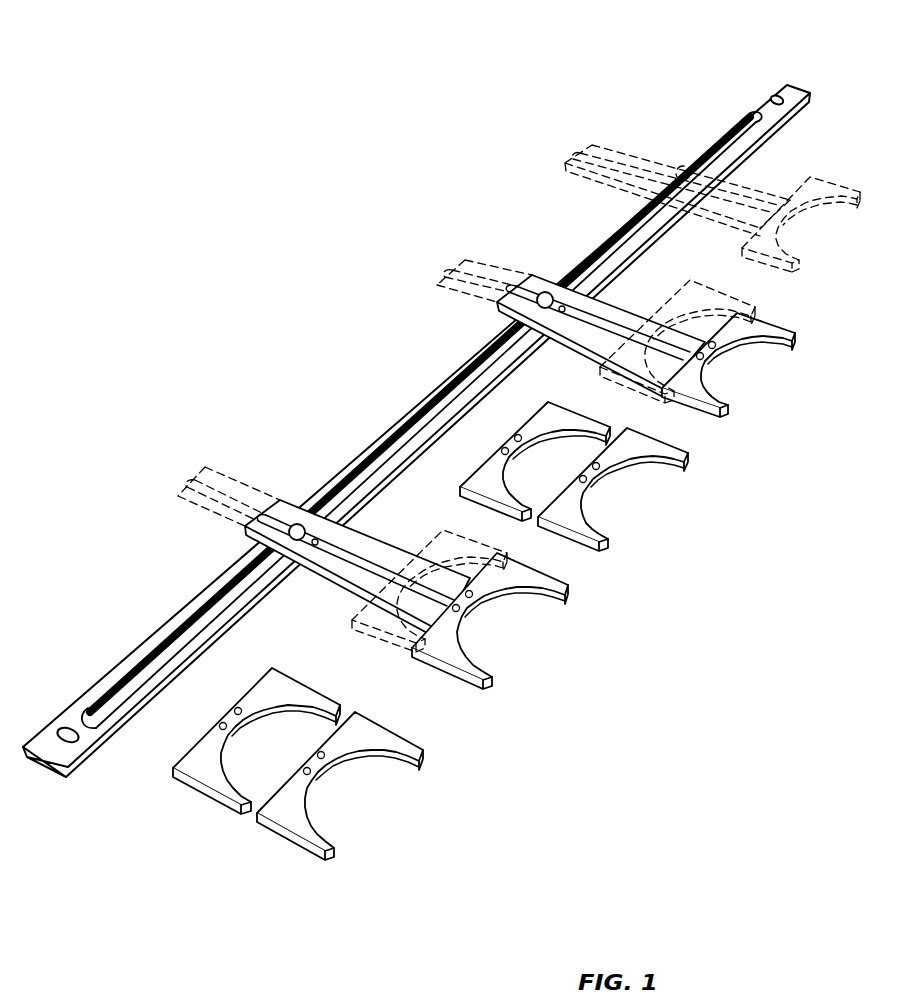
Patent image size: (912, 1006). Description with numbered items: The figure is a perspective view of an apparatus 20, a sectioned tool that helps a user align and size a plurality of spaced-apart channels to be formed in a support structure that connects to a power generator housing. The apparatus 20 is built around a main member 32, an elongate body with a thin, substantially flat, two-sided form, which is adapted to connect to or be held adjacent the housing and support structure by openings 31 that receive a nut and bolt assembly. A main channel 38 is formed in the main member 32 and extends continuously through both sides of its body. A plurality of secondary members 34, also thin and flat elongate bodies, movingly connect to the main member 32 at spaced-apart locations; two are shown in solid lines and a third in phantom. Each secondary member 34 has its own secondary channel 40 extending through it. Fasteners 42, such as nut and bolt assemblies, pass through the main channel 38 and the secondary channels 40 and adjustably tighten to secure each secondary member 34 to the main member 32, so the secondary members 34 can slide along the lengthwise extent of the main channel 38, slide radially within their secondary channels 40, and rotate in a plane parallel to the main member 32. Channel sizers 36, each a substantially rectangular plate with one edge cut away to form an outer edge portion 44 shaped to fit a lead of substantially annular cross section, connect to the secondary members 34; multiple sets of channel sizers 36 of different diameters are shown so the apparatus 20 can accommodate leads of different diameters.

The apparatus 20 is at (350, 240).
The openings 31 is at (68, 728).
The main member 32 is at (75, 770).
The secondary members 34 is at (358, 548).
The channel sizers 36 is at (292, 855).
The main channel 38 is at (185, 627).
The secondary channel 40 is at (345, 568).
The fasteners 42 is at (297, 524).
The outer edge portion 44 is at (383, 752).